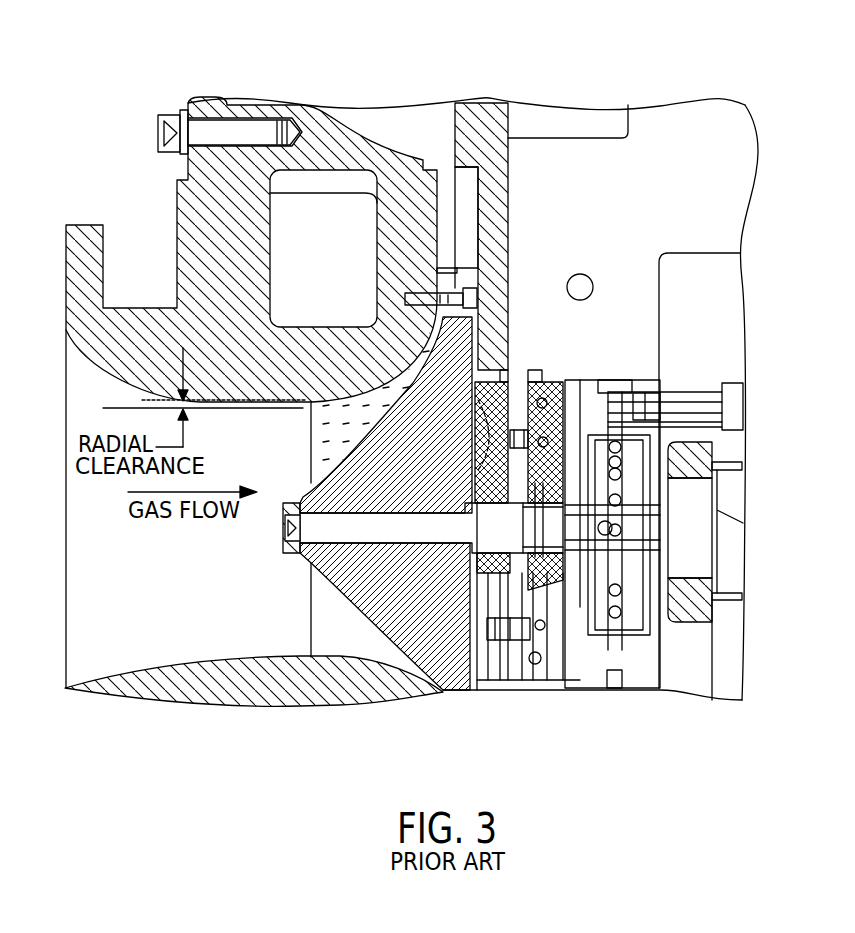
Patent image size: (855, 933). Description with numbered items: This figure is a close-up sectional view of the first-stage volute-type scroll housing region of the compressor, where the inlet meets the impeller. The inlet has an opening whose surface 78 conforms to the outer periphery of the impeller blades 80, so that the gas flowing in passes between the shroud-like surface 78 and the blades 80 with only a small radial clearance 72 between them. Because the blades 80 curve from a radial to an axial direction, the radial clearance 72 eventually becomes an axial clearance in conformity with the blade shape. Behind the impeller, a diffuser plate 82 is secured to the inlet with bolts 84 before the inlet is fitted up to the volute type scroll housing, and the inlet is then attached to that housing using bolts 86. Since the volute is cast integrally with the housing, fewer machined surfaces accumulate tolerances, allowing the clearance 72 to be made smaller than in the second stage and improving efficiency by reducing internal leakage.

The radial clearance 72 is at (142, 400).
The surface 78 is at (157, 335).
The blades 80 is at (308, 452).
The diffuser plate 82 is at (465, 193).
The bolts 84 is at (447, 290).
The bolts 86 is at (158, 131).